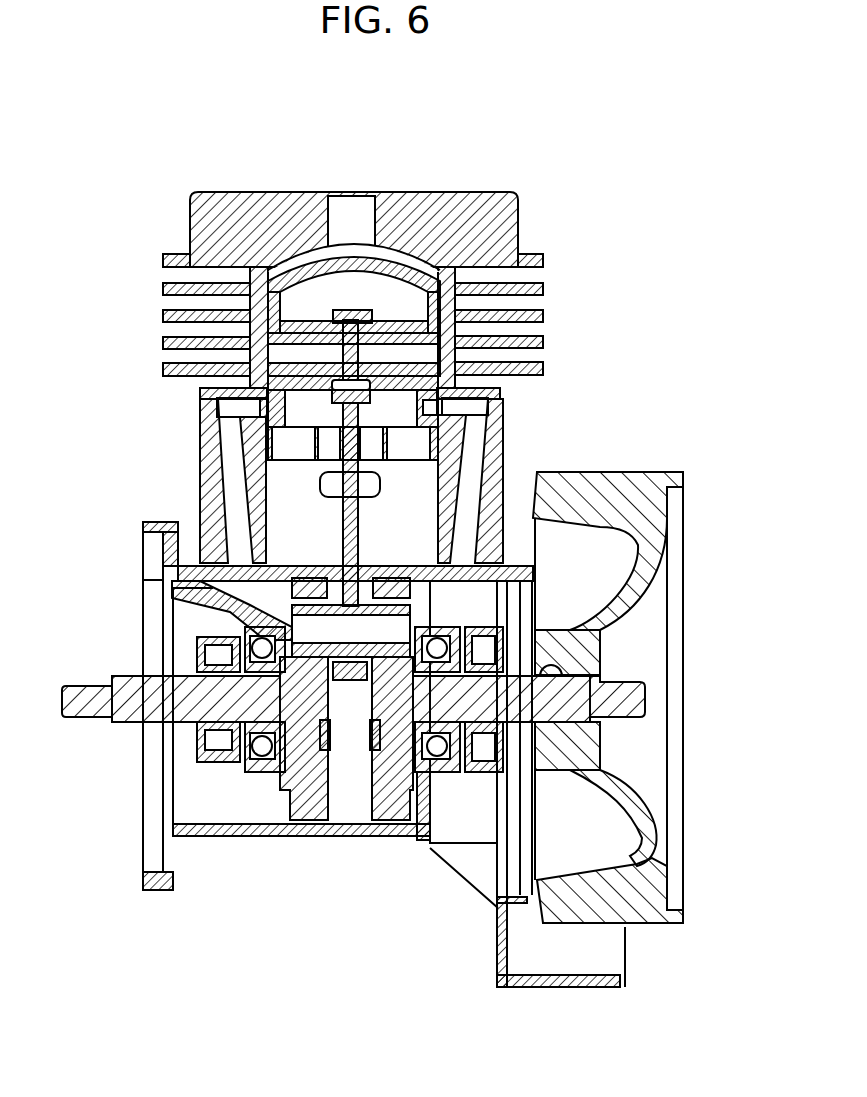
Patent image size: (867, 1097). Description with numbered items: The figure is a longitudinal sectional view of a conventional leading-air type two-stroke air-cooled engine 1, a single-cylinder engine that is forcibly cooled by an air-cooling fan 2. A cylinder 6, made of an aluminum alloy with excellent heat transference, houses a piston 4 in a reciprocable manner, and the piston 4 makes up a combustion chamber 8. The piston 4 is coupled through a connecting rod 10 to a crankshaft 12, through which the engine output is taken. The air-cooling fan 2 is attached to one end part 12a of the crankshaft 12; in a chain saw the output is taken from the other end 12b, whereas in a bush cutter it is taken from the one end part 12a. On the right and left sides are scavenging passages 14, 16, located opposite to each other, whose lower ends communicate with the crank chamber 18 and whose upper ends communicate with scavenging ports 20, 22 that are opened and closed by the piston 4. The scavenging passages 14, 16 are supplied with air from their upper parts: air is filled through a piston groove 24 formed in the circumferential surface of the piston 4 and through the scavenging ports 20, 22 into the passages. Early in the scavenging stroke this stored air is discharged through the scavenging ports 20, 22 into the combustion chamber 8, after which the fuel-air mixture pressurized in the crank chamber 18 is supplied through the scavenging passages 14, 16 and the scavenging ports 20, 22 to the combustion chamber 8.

The leading-air type two-stroke air-cooled engine 1 is at (144, 158).
The air-cooling fan 2 is at (632, 484).
The piston 4 is at (287, 285).
The cylinder 6 is at (450, 280).
The combustion chamber 8 is at (357, 252).
The connecting rod 10 is at (345, 520).
The crankshaft 12 is at (264, 707).
The one end part of the crankshaft 12a is at (620, 697).
The other end of the crankshaft 12b is at (98, 708).
The scavenging passage 14 is at (470, 487).
The scavenging passage 16 is at (228, 448).
The crank chamber 18 is at (350, 800).
The scavenging port 20 is at (458, 406).
The scavenging port 22 is at (250, 412).
The piston groove 24 is at (263, 397).